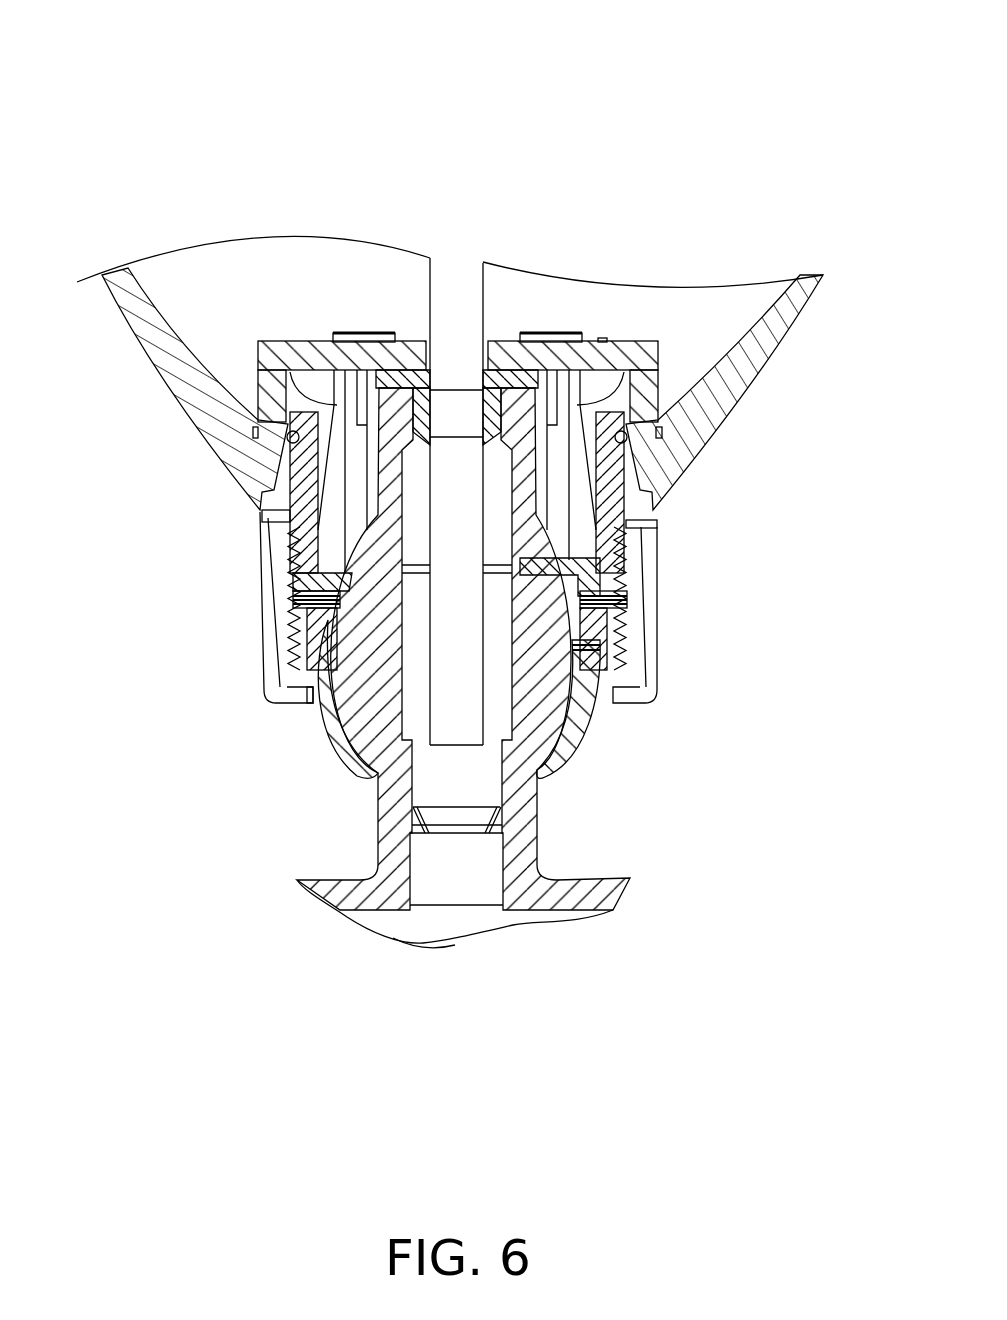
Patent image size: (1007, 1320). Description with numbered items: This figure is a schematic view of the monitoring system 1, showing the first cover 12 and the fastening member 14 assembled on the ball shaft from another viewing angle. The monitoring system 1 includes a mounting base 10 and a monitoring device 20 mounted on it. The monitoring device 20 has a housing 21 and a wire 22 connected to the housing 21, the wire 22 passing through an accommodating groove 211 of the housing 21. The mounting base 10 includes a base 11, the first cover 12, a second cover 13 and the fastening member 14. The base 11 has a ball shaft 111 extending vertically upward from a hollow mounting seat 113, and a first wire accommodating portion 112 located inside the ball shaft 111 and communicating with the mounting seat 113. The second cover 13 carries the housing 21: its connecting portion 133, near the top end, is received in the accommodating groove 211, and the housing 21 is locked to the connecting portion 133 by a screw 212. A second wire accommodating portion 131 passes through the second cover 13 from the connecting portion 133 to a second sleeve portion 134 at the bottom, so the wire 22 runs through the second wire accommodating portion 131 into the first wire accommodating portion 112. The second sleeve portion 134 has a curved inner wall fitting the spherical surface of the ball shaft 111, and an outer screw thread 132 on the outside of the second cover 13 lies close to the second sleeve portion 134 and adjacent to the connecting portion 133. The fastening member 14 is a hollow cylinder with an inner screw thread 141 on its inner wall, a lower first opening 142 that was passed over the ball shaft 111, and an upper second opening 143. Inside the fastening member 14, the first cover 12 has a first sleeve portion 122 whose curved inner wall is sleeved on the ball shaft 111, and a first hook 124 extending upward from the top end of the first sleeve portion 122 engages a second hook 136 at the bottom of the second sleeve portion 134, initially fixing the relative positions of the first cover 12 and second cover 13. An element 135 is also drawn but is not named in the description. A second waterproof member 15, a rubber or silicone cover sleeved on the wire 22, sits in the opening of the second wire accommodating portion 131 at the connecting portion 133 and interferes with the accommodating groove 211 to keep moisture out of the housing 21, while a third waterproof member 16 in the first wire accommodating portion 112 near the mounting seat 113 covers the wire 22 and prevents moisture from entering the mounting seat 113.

The monitoring system 1 is at (137, 100).
The mounting base 10 is at (150, 642).
The base 11 is at (306, 879).
The ball shaft 111 is at (373, 697).
The first wire accommodating portion 112 is at (290, 613).
The mounting seat 113 is at (624, 879).
The first cover 12 is at (577, 724).
The first sleeve portion 122 is at (598, 707).
The first hook 124 is at (623, 606).
The second cover 13 is at (630, 457).
The second wire accommodating portion 131 is at (412, 484).
The outer screw thread 132 is at (650, 527).
The connecting portion 133 is at (627, 436).
The second sleeve portion 134 is at (288, 572).
The positioning ball 135 is at (288, 437).
The second hook 136 is at (623, 660).
The fastening member 14 is at (645, 636).
The inner screw thread 141 is at (628, 546).
The first opening 142 is at (313, 705).
The second opening 143 is at (283, 517).
The second waterproof member 15 is at (505, 368).
The third waterproof member 16 is at (471, 858).
The monitoring device 20 is at (90, 262).
The housing 21 is at (760, 364).
The accommodating groove 211 is at (258, 408).
The screw 212 is at (347, 333).
The wire 22 is at (461, 290).